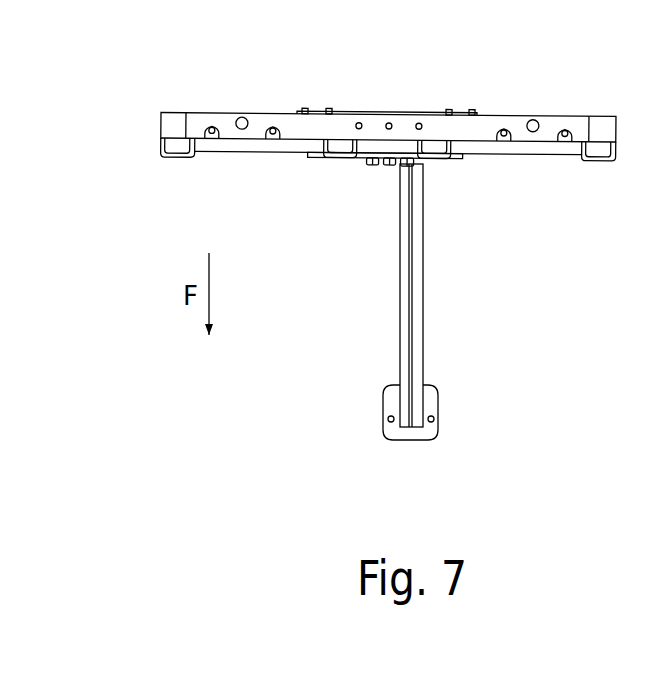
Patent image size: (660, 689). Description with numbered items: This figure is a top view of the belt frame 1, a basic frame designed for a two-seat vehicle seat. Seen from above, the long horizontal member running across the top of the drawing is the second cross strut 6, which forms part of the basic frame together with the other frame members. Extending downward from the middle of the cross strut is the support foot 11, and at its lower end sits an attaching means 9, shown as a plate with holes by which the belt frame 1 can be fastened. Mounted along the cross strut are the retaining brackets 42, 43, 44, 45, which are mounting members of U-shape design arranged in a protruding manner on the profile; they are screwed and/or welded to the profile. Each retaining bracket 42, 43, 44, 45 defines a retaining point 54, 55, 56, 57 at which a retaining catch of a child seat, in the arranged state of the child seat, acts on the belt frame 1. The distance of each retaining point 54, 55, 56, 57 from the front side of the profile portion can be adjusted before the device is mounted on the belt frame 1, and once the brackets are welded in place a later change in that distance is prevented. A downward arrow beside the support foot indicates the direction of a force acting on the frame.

The belt frame 1 is at (306, 458).
The second cross strut 6 is at (578, 125).
The attaching means 9 is at (404, 430).
The support foot 11 is at (413, 314).
The retaining bracket 42 is at (153, 173).
The retaining bracket 43 is at (346, 171).
The retaining bracket 44 is at (471, 171).
The retaining bracket 45 is at (585, 173).
The retaining point 54 is at (175, 158).
The retaining point 55 is at (336, 158).
The retaining point 56 is at (435, 158).
The retaining point 57 is at (597, 160).